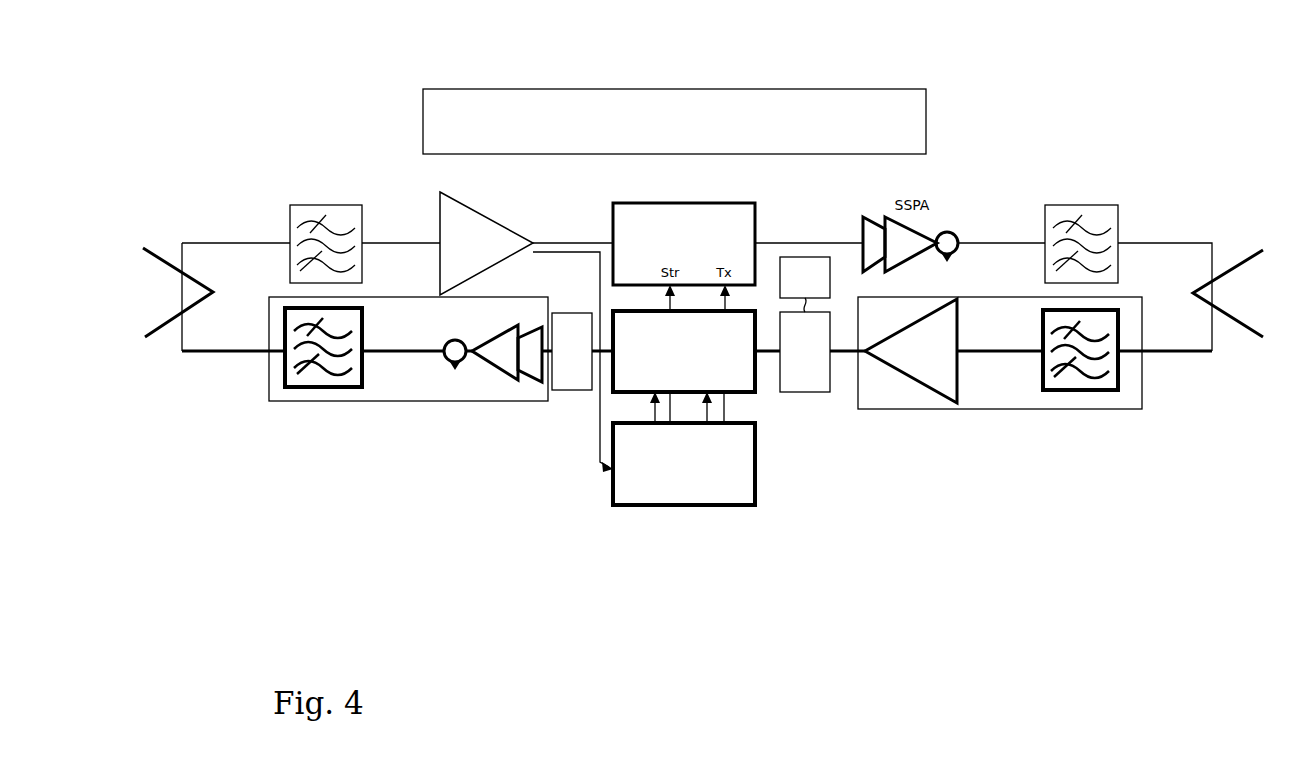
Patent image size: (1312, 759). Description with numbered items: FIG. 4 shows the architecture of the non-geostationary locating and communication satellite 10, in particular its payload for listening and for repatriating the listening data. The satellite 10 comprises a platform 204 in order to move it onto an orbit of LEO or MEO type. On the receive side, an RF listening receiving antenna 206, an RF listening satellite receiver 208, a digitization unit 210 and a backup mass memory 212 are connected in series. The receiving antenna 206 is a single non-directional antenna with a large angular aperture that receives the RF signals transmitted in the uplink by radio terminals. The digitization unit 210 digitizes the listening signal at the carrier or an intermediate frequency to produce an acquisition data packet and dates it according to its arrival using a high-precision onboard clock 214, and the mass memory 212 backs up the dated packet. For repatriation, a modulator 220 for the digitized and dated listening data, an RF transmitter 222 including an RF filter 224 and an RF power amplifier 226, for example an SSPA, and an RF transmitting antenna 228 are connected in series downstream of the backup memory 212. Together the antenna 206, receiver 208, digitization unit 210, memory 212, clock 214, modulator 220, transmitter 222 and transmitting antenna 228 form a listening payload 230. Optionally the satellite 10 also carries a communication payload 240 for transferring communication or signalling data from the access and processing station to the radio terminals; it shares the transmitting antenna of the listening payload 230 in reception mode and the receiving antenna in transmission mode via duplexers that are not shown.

The non-geostationary locating and communication satellite 10 is at (318, 79).
The platform 204 is at (656, 131).
The RF listening receiving antenna 206 is at (1240, 323).
The RF listening satellite receiver 208 is at (993, 410).
The digitization unit 210 is at (805, 393).
The backup mass memory 212 is at (667, 359).
The high-precision onboard clock 214 is at (792, 288).
The modulator 220 is at (568, 391).
The RF transmitter 222 is at (388, 402).
The RF filter 224 is at (305, 388).
The RF power amplifier 226 is at (493, 382).
The RF transmitting antenna 228 is at (163, 330).
The listening payload 230 is at (816, 472).
The communication payload 240 is at (387, 188).